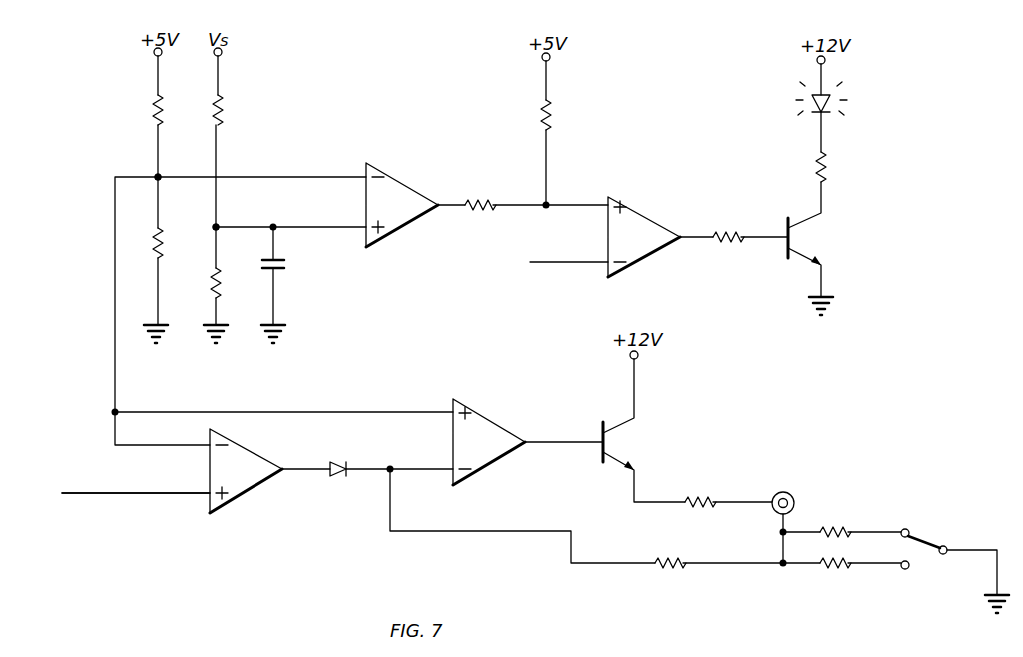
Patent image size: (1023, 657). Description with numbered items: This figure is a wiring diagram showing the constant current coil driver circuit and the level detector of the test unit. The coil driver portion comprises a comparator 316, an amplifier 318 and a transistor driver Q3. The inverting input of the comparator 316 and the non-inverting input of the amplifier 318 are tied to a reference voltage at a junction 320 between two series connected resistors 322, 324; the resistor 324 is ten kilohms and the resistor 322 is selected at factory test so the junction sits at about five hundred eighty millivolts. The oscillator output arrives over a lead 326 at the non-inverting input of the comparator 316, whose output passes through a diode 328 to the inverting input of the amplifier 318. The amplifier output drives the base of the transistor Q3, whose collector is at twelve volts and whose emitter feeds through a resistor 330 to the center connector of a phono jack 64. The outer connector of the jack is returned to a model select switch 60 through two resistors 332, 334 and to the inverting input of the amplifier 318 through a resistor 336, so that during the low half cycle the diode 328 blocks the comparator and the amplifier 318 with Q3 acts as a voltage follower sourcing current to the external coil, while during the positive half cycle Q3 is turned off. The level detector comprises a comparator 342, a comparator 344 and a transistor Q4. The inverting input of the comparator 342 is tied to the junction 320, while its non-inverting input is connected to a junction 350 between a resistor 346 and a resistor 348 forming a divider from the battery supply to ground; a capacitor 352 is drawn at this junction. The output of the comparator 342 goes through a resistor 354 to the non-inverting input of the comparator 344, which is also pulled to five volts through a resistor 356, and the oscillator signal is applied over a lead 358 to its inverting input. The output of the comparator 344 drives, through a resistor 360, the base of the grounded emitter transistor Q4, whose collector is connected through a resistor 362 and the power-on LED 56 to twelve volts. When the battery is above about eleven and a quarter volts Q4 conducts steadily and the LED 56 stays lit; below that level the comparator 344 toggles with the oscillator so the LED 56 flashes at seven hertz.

The comparator 316 is at (255, 465).
The amplifier 318 is at (484, 428).
The junction 320 is at (156, 177).
The resistor 322 is at (150, 108).
The resistor 324 is at (160, 252).
The lead 326 is at (100, 492).
The diode 328 is at (332, 478).
The resistor 330 is at (697, 498).
The resistor 332 is at (833, 528).
The resistor 334 is at (846, 570).
The resistor 336 is at (676, 570).
The comparator 342 is at (398, 190).
The comparator 344 is at (636, 216).
The resistor 346 is at (223, 110).
The resistor 348 is at (219, 285).
The junction 350 is at (217, 226).
The capacitor 352 is at (284, 266).
The resistor 354 is at (480, 211).
The resistor 356 is at (551, 112).
The lead 358 is at (568, 265).
The resistor 360 is at (727, 232).
The resistor 362 is at (826, 157).
The power on LED 56 is at (852, 108).
The model select switch 60 is at (932, 535).
The phono jack 64 is at (792, 492).
The transistor driver Q3 is at (604, 428).
The transistor Q4 is at (786, 248).